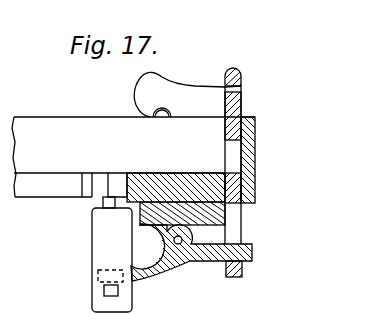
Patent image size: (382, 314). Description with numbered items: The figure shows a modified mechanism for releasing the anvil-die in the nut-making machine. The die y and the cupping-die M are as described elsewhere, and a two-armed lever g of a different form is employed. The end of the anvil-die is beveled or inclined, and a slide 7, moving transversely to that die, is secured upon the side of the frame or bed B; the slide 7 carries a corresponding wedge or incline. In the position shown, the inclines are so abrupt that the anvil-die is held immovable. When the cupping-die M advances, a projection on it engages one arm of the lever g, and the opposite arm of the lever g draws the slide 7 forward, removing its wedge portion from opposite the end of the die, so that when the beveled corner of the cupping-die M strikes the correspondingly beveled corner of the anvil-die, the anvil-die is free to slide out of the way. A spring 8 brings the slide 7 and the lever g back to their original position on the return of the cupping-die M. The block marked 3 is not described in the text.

The frame or bed B is at (133, 157).
The die y is at (53, 185).
The guide block 3 is at (115, 190).
The cupping-die M is at (112, 260).
The slide 7 is at (233, 172).
The spring 8 is at (241, 86).
The two-armed lever g is at (156, 268).